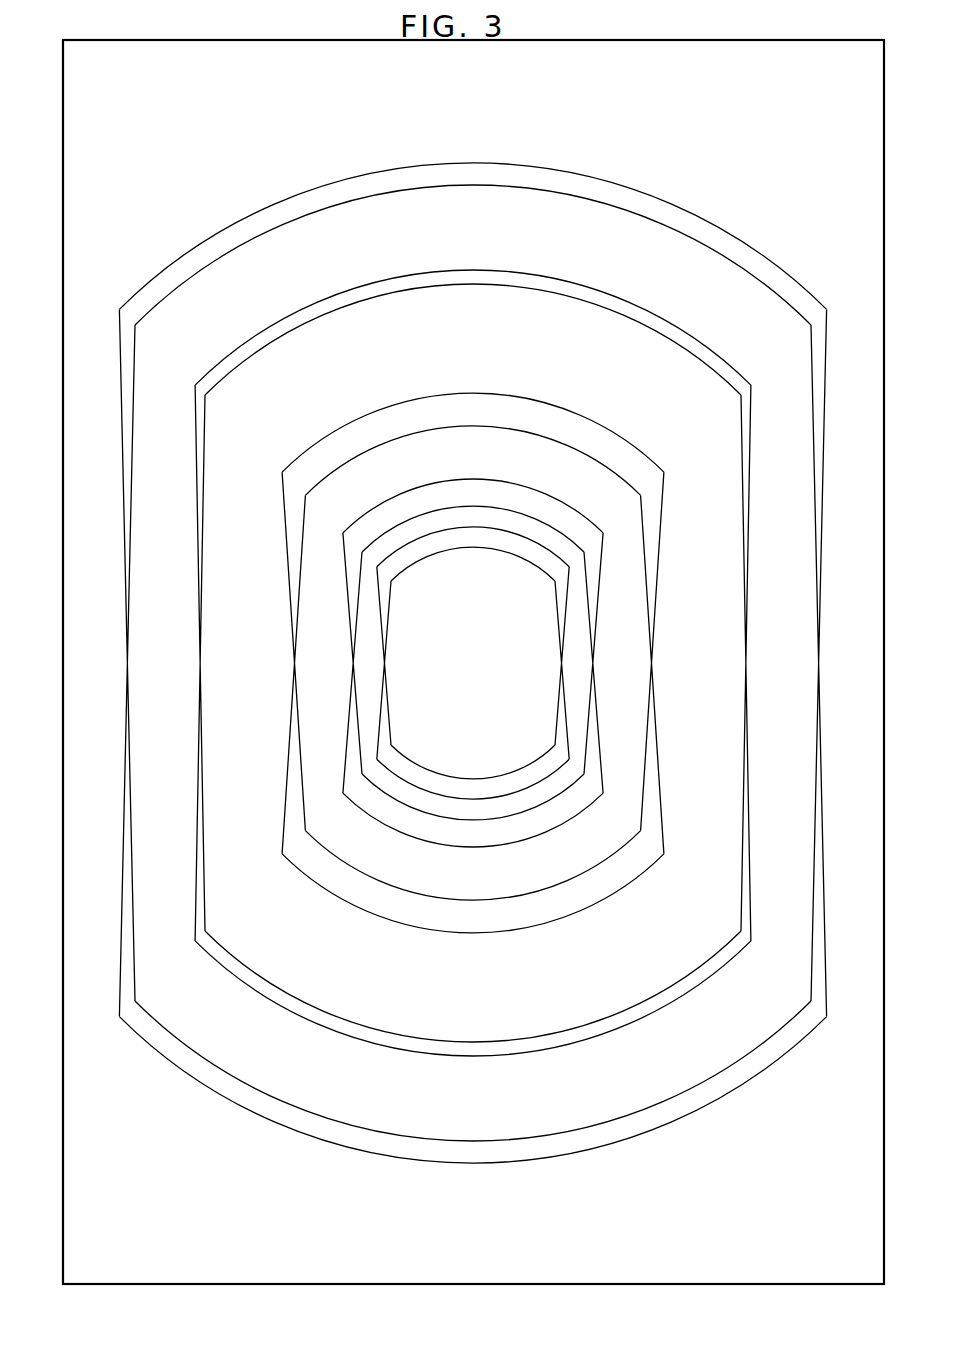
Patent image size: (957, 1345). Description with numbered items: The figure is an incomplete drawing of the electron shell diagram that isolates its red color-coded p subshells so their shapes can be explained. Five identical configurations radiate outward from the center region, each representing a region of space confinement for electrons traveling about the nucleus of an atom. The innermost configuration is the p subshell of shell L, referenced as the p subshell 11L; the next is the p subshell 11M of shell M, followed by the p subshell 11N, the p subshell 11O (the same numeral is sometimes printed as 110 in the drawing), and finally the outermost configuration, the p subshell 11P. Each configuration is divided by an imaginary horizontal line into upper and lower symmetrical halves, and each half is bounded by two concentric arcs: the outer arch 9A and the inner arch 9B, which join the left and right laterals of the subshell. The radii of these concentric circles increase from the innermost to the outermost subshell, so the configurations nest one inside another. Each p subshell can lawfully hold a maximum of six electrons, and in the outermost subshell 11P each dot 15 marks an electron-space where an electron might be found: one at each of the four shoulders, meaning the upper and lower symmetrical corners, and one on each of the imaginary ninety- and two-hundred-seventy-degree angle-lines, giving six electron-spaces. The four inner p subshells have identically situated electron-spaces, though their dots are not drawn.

The outer arch 9A is at (446, 166).
The inner arch 9B is at (518, 206).
The dot 15 is at (132, 322).
The p subshell of shell P 11P is at (497, 657).
The p subshell of shell O 11O is at (473, 663).
The second coil 110 is at (209, 387).
The p subshell of shell N 11N is at (640, 852).
The p subshell of shell M 11M is at (591, 632).
The p subshell of shell L 11L is at (558, 731).